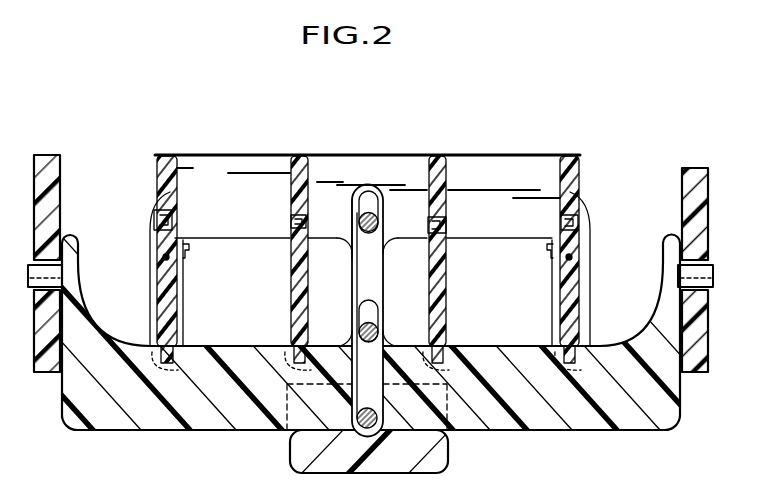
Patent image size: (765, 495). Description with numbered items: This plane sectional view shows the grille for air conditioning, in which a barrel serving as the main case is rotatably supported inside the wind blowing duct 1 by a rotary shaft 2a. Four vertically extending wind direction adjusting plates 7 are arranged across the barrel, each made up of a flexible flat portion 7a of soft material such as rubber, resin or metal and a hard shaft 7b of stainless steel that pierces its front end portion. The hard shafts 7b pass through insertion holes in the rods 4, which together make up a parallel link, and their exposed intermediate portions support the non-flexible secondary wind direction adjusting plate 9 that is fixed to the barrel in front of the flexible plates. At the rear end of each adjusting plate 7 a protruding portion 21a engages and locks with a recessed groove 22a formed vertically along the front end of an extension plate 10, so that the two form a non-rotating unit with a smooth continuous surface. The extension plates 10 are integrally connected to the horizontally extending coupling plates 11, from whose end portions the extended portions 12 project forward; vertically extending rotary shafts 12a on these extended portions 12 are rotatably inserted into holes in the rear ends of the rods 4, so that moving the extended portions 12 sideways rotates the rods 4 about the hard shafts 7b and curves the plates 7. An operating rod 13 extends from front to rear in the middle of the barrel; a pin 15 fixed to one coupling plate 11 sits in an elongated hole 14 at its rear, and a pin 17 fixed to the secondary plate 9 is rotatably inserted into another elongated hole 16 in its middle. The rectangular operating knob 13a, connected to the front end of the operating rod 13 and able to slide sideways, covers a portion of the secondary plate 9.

The wind blowing duct 1 is at (706, 217).
The rotary shaft 2a is at (711, 268).
The rod 4 is at (151, 273).
The wind direction adjusting plate 7 is at (288, 318).
The flexible flat portion 7a is at (291, 292).
The hard shaft 7b is at (173, 362).
The secondary wind direction adjusting plate 9 is at (590, 420).
The extension plate 10 is at (283, 153).
The coupling plate 11 is at (358, 162).
The extended portion 12 is at (189, 252).
The rotary shaft 12a is at (158, 247).
The operating rod 13 is at (352, 268).
The operating knob 13a is at (448, 455).
The elongated hole 14 is at (377, 197).
The pin 15 is at (352, 205).
The elongated hole 16 is at (374, 320).
The pin 17 is at (357, 331).
The protruding portion 21a is at (289, 220).
The recessed groove 22a is at (158, 212).